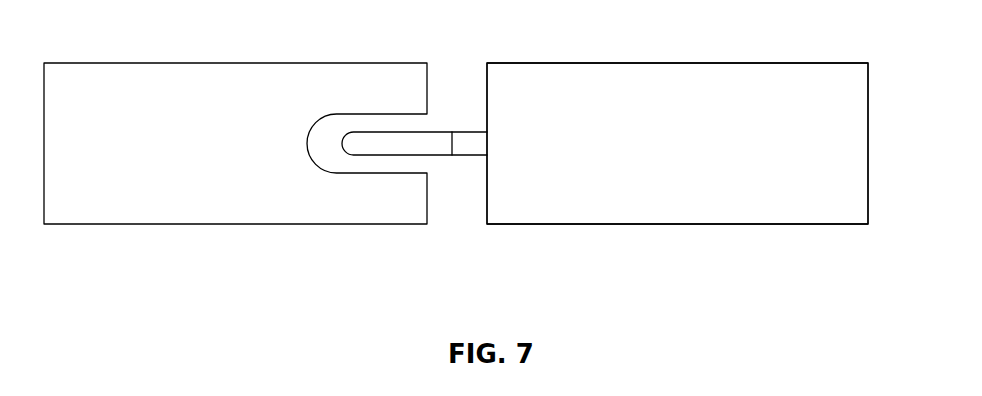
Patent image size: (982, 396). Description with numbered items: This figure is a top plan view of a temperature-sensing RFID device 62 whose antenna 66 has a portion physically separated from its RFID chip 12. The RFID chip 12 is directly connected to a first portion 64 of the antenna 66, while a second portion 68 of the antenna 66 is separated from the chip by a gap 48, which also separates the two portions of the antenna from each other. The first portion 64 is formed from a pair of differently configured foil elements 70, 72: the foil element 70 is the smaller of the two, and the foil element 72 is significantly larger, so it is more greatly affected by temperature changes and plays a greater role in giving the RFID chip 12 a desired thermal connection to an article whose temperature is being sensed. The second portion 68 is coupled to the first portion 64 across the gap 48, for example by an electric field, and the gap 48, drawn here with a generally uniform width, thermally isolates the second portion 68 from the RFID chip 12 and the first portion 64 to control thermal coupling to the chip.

The RFID chip 12 is at (471, 137).
The gap 48 is at (333, 157).
The RFID device 62 is at (456, 163).
The first portion of the antenna 64 is at (638, 88).
The antenna 66 is at (433, 155).
The second portion of the antenna 68 is at (249, 90).
The foil element 70 is at (405, 140).
The foil element 72 is at (677, 143).